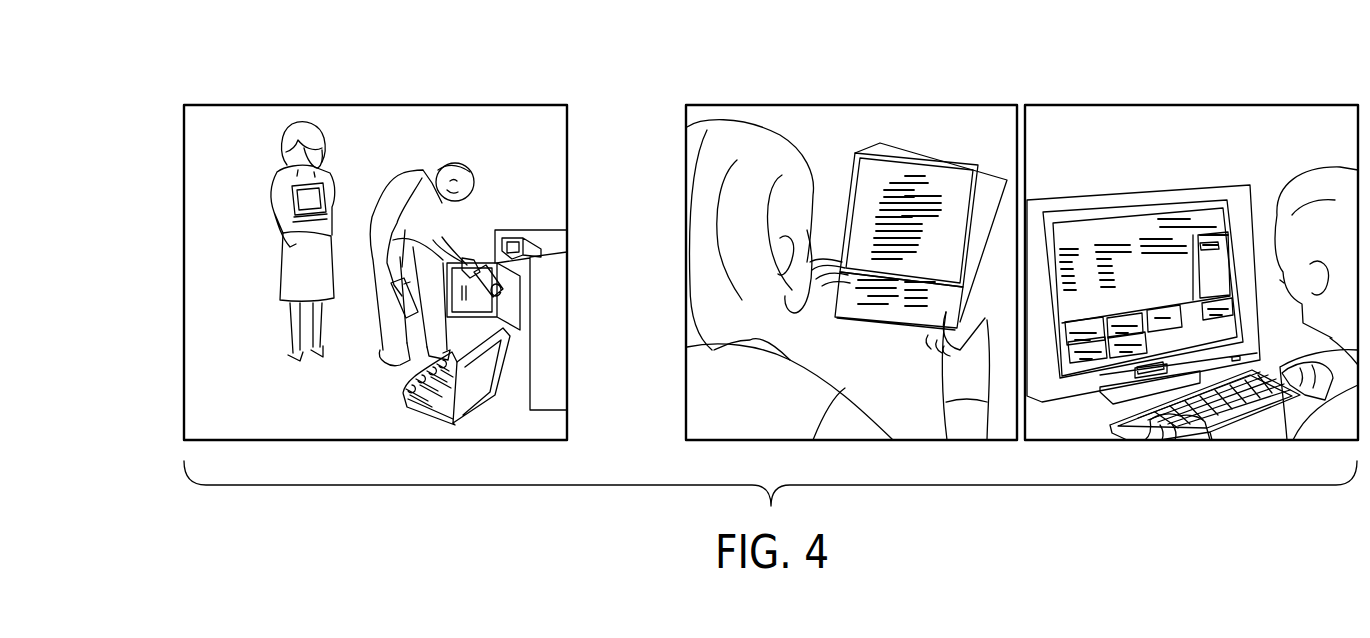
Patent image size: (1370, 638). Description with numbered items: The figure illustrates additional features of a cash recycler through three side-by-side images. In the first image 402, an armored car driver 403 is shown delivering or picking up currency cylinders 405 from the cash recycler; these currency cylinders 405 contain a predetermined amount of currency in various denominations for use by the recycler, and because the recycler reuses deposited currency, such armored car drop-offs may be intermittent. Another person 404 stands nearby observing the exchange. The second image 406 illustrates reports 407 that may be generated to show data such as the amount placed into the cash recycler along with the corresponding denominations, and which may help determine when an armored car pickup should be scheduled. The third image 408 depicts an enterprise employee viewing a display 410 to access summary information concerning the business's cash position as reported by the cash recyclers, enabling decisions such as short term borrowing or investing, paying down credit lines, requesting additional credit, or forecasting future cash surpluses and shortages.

The image 402 is at (491, 113).
The armored car driver 403 is at (407, 178).
The observer 404 is at (280, 268).
The currency cylinders 405 is at (503, 298).
The image 406 is at (820, 113).
The reports 407 is at (945, 172).
The image 408 is at (1226, 112).
The display screen 410 is at (1120, 223).